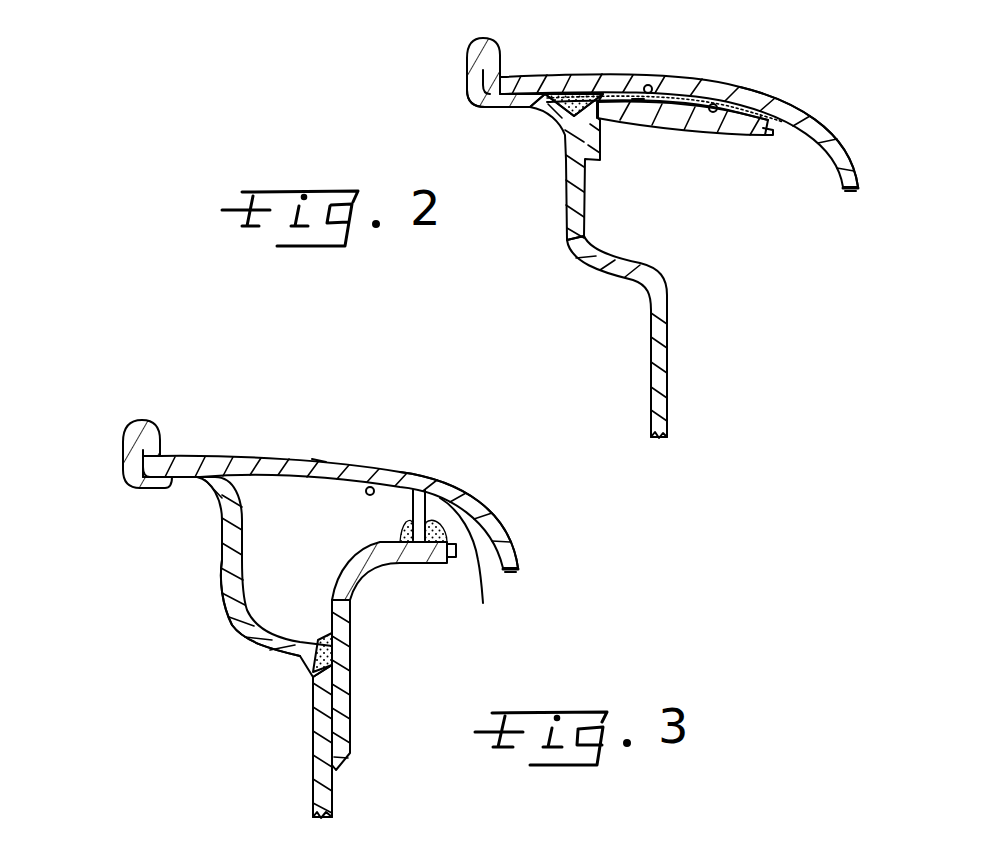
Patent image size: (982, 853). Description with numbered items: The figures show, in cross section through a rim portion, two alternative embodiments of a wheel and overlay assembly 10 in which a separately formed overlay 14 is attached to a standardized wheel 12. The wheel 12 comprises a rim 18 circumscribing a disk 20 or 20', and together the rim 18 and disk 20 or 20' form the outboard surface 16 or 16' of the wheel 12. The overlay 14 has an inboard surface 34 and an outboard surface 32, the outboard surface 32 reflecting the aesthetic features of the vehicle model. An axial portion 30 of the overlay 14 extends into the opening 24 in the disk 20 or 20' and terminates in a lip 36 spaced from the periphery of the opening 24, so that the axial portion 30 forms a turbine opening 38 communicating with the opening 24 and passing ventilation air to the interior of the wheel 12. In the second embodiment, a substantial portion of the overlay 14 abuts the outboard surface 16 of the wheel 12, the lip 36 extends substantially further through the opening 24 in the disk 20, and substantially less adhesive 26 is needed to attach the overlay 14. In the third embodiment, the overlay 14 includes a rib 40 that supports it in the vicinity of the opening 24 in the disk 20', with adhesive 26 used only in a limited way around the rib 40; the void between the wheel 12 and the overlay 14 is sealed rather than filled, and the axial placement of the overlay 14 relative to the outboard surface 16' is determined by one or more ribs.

In FIG. 2, the wheel and overlay assembly 10 is at (457, 110).
In FIG. 3, the wheel and overlay assembly 10 is at (565, 559).
In FIG. 2, the wheel 12 is at (620, 288).
In FIG. 3, the wheel 12 is at (256, 665).
In FIG. 2, the overlay 14 is at (697, 72).
In FIG. 3, the overlay 14 is at (250, 444).
In FIG. 2, the outboard surface 16 is at (637, 136).
In FIG. 3, the outboard surface 16' is at (367, 557).
In FIG. 2, the rim 18 is at (566, 134).
In FIG. 3, the rim 18 is at (230, 526).
In FIG. 2, the disk 20 is at (682, 155).
In FIG. 3, the disk 20' is at (364, 709).
In FIG. 2, the opening 24 is at (770, 138).
In FIG. 3, the opening 24 is at (455, 556).
In FIG. 2, the adhesive 26 is at (577, 92).
In FIG. 3, the adhesive 26 is at (404, 540).
In FIG. 2, the axial portion 30 is at (843, 152).
In FIG. 3, the axial portion 30 is at (489, 510).
In FIG. 2, the outboard surface 32 is at (650, 77).
In FIG. 3, the outboard surface 32 is at (320, 457).
In FIG. 2, the inboard surface 34 is at (718, 102).
In FIG. 3, the inboard surface 34 is at (373, 487).
In FIG. 2, the lip 36 is at (851, 193).
In FIG. 3, the lip 36 is at (515, 574).
In FIG. 2, the turbine opening 38 is at (860, 189).
In FIG. 3, the turbine opening 38 is at (525, 568).
In FIG. 3, the rib 40 is at (483, 603).